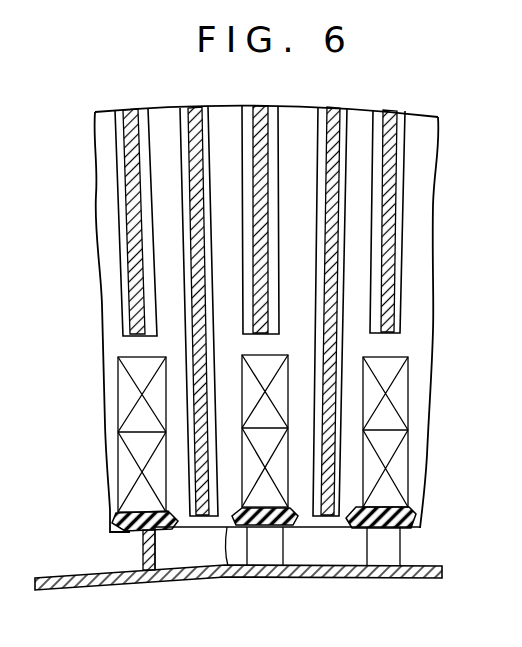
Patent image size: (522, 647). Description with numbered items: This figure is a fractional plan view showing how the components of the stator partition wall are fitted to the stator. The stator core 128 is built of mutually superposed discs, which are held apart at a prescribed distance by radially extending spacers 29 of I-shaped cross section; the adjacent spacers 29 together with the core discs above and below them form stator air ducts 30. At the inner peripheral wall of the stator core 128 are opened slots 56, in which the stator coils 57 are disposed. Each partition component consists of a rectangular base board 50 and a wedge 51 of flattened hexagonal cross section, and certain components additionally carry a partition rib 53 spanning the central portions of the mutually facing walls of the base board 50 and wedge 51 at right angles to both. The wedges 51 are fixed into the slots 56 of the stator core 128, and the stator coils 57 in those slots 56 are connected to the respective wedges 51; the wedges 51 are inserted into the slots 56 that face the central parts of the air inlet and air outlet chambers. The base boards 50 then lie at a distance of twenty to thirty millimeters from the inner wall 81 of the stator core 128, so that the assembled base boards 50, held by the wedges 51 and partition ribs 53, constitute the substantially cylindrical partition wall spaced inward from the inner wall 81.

The spacer 29 is at (192, 110).
The stator air duct 30 is at (170, 148).
The stator core 128 is at (433, 148).
The stator coil 57 is at (124, 455).
The wedge 51 is at (120, 515).
The partition rib 53 is at (143, 549).
The slot 56 is at (160, 530).
The base board 50 is at (147, 587).
The inner wall 81 is at (222, 580).